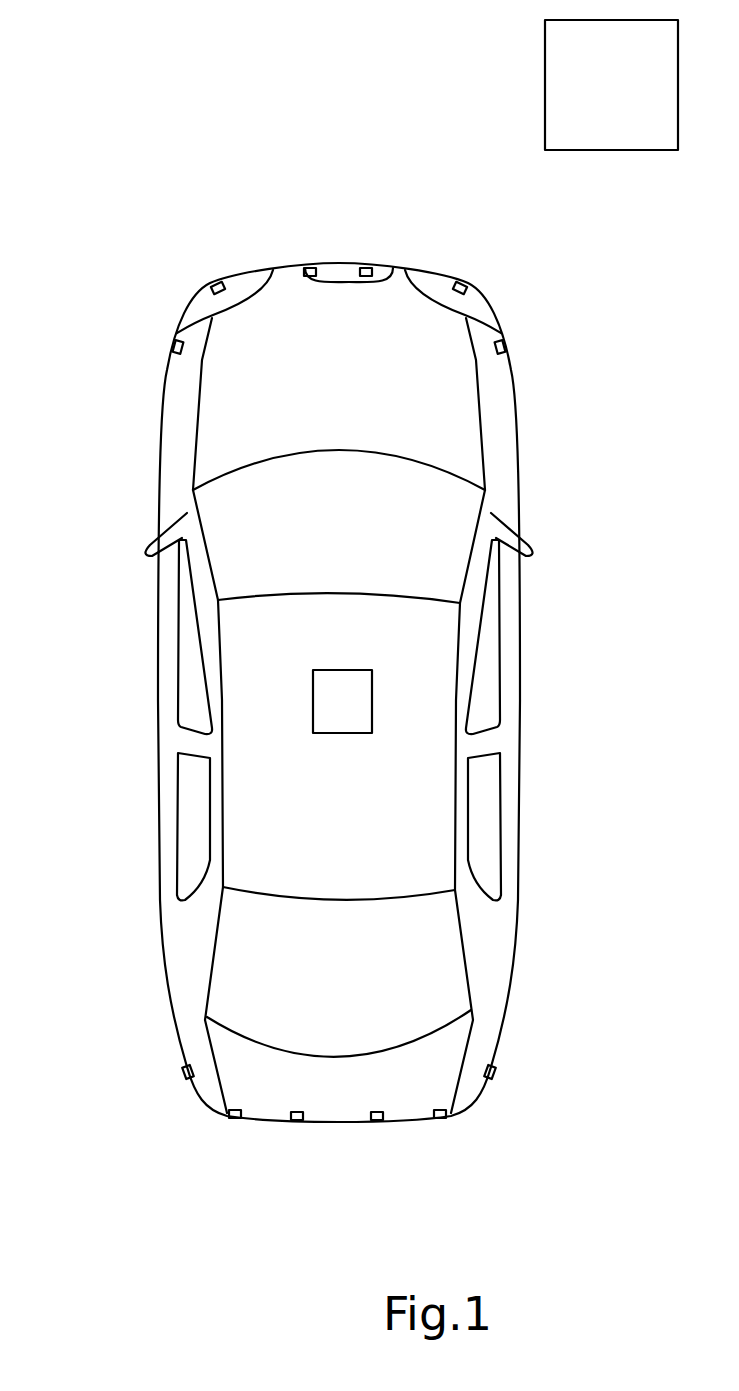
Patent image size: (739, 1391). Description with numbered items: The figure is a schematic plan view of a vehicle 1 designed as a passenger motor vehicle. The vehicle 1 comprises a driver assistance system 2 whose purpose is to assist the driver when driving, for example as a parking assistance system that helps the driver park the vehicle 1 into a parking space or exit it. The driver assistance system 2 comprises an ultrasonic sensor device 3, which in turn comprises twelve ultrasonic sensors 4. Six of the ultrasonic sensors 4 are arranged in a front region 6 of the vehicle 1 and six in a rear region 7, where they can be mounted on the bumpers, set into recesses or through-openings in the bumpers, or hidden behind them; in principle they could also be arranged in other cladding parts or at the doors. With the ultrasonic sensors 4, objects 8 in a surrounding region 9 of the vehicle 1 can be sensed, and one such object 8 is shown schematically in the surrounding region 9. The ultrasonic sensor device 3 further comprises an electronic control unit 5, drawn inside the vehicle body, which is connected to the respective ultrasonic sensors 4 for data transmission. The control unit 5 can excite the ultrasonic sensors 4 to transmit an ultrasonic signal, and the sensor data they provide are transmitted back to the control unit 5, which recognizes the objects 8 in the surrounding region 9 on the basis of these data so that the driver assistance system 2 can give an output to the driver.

The vehicle 1 is at (340, 268).
The driver assistance system 2 is at (156, 281).
The ultrasonic sensor device 3 is at (240, 245).
The ultrasonic sensor 4 is at (216, 283).
The electronic control unit 5 is at (372, 690).
The front region 6 is at (437, 217).
The rear region 7 is at (427, 1146).
The object 8 is at (625, 150).
The surrounding region 9 is at (336, 106).